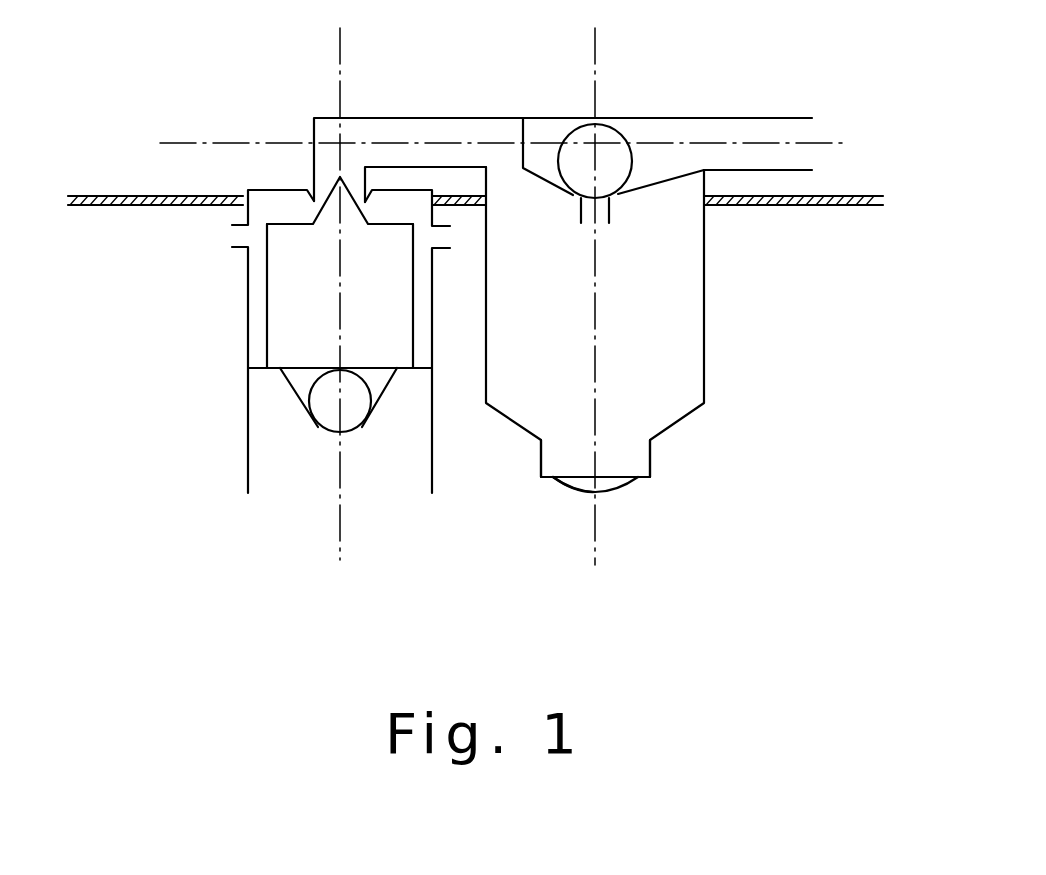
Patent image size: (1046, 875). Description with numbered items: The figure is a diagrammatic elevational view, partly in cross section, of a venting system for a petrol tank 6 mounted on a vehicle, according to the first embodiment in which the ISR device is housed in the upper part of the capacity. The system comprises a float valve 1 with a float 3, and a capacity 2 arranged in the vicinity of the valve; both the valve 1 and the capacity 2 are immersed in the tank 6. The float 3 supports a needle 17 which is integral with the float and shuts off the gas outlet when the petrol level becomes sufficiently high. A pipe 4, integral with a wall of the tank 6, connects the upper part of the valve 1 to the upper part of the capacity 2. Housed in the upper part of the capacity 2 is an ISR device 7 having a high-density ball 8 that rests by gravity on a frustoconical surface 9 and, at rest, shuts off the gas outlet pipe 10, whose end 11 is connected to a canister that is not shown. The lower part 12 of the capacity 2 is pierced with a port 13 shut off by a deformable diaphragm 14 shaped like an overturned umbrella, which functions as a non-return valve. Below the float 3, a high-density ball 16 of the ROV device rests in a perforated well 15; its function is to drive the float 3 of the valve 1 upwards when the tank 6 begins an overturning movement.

The float valve 1 is at (202, 353).
The capacity 2 is at (727, 319).
The float 3 is at (298, 268).
The pipe 4 is at (368, 128).
The petrol tank 6 is at (473, 423).
The ISR device 7 is at (542, 162).
The high-density ball 8 is at (608, 155).
The frustoconical surface 9 is at (677, 175).
The gas outlet pipe 10 is at (612, 212).
The end of gas outlet pipe 11 is at (807, 135).
The lower part of the capacity 12 is at (652, 462).
The port 13 is at (612, 488).
The deformable diaphragm 14 is at (570, 495).
The perforated well 15 is at (378, 382).
The ball 16 is at (330, 407).
The needle 17 is at (332, 217).